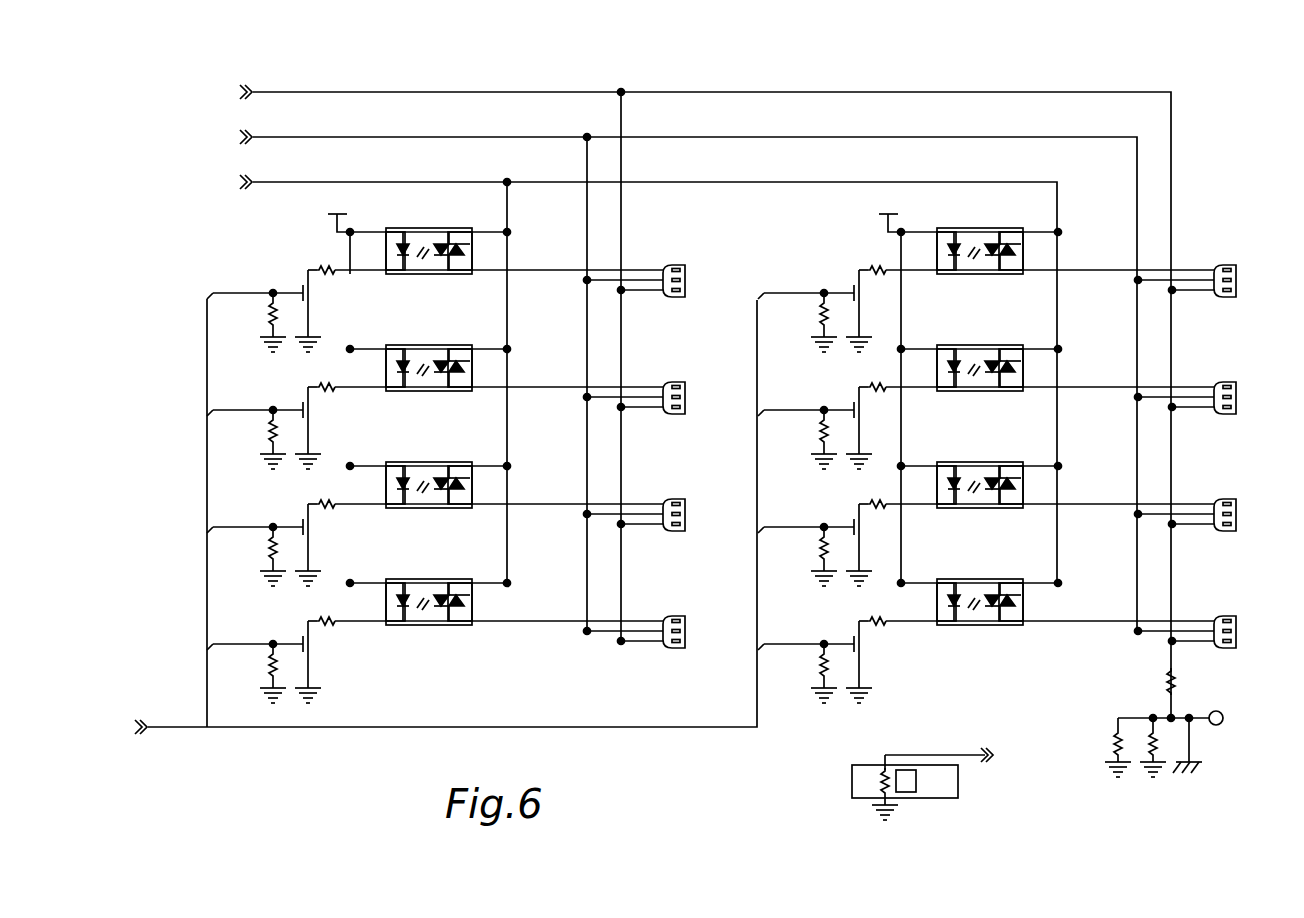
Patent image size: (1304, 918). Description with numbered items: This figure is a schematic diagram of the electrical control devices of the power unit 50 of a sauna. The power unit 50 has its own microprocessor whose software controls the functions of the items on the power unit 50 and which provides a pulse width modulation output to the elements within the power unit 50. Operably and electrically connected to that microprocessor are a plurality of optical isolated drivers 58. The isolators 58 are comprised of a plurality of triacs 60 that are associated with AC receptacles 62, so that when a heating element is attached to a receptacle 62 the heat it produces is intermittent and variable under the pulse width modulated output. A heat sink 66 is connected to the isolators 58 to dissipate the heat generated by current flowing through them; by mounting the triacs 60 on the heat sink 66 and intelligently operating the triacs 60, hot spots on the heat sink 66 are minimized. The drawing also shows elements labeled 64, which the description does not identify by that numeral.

The power unit 50 is at (174, 73).
The optical isolated driver 58 is at (670, 407).
The triac 60 is at (737, 407).
The AC receptacle 62 is at (910, 438).
The optocoupler 64 is at (704, 450).
The heat sink 66 is at (852, 738).